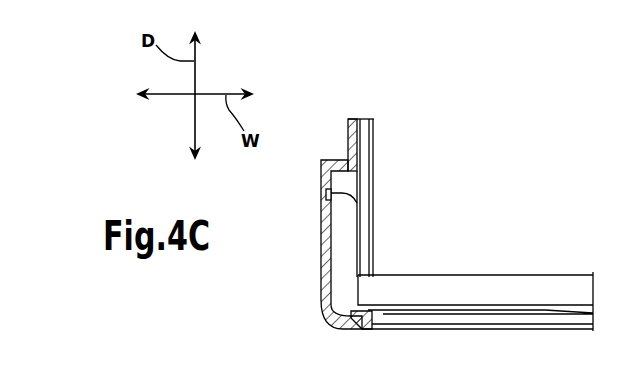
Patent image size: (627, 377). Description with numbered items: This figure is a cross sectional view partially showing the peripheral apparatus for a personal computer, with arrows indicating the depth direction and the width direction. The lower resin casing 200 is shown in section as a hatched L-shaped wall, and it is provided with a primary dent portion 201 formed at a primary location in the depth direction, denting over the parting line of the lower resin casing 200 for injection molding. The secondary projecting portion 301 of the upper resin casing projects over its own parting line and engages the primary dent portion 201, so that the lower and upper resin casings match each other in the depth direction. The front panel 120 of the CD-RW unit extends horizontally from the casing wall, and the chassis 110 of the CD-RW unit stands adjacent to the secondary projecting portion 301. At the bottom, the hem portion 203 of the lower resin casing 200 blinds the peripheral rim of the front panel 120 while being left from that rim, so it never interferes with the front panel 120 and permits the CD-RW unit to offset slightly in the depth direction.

The chassis 110 is at (383, 165).
The front panel 120 is at (443, 290).
The lower resin casing 200 is at (322, 290).
The primary dent portion 201 is at (326, 194).
The hem portion 203 is at (366, 325).
The secondary projecting portion 301 is at (357, 203).